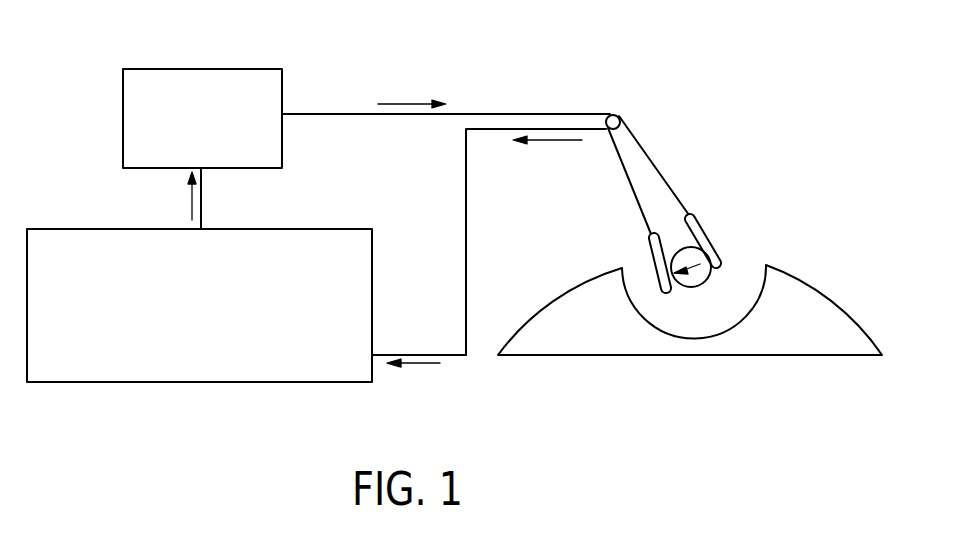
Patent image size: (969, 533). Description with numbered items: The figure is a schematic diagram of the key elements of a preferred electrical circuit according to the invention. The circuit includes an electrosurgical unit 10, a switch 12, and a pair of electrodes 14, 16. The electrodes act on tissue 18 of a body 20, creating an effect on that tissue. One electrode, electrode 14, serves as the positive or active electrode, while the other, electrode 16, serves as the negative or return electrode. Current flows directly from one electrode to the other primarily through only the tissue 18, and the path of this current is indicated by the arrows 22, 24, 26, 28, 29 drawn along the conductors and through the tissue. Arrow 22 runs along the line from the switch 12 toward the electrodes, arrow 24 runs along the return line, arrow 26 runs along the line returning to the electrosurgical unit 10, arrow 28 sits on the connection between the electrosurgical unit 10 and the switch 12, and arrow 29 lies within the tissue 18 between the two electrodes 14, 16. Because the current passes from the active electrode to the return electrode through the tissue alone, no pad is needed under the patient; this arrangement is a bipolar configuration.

The electrosurgical unit 10 is at (166, 382).
The switch 12 is at (123, 117).
The electrode 14 is at (693, 214).
The electrode 16 is at (648, 236).
The tissue 18 is at (693, 289).
The body 20 is at (800, 285).
The arrow 22 is at (397, 104).
The arrow 24 is at (557, 140).
The arrow 26 is at (422, 365).
The arrow 28 is at (190, 203).
The arrow 29 is at (700, 264).